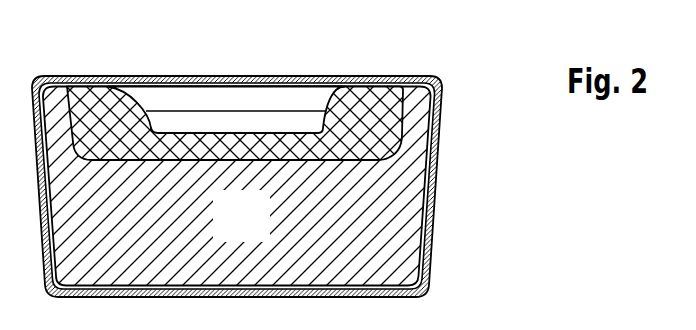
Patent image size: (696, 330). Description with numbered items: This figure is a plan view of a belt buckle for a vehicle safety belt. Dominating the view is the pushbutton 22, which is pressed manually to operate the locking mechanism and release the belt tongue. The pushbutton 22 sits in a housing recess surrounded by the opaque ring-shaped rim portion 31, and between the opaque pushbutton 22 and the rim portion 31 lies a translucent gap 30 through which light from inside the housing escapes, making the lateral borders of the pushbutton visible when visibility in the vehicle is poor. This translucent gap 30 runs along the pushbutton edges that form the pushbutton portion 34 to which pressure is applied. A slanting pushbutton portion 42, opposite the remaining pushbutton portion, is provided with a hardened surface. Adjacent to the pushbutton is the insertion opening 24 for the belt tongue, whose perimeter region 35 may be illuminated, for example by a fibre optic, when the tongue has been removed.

The pushbutton 22 is at (253, 235).
The insertion opening 24 is at (257, 120).
The translucent gap 30 is at (433, 192).
The ring-shaped rim portion 31 is at (442, 107).
The pushbutton portion 34 is at (373, 234).
The perimeter region 35 is at (212, 97).
The slanting pushbutton portion 42 is at (350, 110).